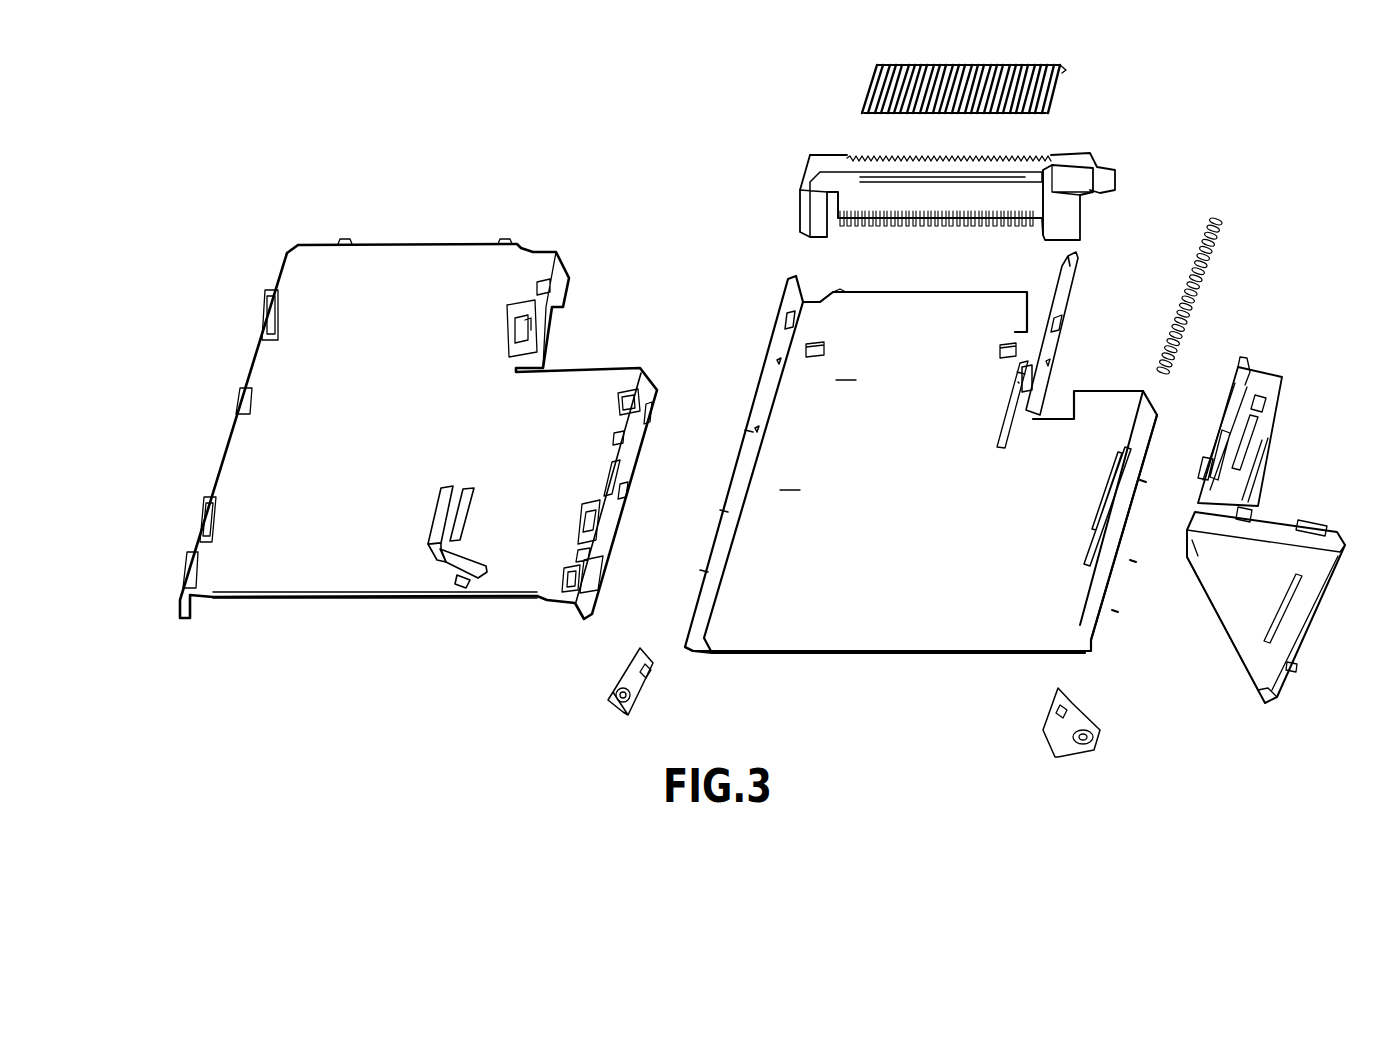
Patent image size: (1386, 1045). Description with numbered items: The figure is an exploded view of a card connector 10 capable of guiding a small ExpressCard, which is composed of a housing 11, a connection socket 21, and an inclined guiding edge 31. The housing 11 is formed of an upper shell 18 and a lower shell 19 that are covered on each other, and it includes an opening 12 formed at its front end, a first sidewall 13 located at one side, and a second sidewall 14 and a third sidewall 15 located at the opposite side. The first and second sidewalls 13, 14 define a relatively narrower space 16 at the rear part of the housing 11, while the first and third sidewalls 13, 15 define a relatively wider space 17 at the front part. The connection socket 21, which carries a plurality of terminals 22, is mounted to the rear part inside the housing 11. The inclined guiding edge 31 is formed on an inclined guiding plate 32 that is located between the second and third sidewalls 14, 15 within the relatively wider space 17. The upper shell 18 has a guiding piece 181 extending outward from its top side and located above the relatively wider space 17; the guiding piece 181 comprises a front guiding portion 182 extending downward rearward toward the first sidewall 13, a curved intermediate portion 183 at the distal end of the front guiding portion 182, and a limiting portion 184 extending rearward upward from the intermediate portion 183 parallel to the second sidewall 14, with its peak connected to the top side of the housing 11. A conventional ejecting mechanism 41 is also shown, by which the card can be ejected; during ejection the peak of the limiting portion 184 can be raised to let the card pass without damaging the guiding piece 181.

The card connector 10 is at (530, 707).
The housing 11 is at (675, 137).
The opening 12 is at (868, 630).
The first sidewall 13 is at (705, 543).
The second sidewall 14 is at (1053, 340).
The third sidewall 15 is at (1103, 590).
The relatively narrower space 16 is at (850, 389).
The relatively wider space 17 is at (793, 484).
The upper shell 18 is at (543, 253).
The lower shell 19 is at (833, 290).
The connection socket 21 is at (1077, 150).
The terminals 22 is at (1057, 93).
The inclined guiding edge 31 is at (1220, 622).
The inclined guiding plate 32 is at (1313, 622).
The ejecting mechanism 41 is at (1264, 414).
The guiding piece 181 is at (443, 560).
The front guiding portion 182 is at (462, 582).
The intermediate portion 183 is at (437, 555).
The limiting portion 184 is at (450, 510).